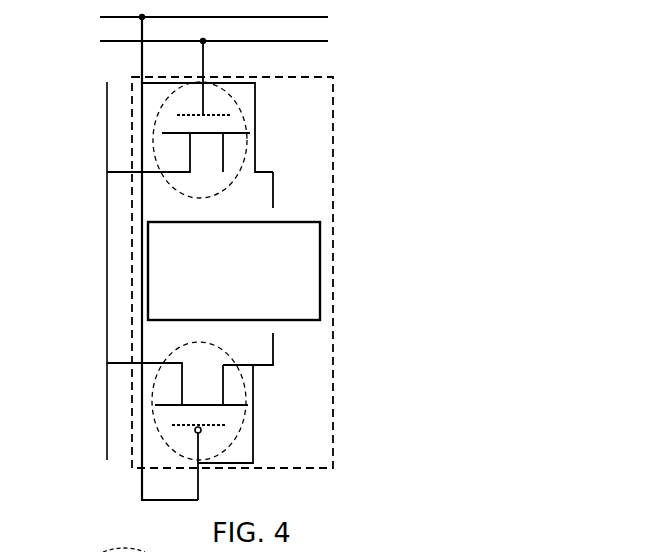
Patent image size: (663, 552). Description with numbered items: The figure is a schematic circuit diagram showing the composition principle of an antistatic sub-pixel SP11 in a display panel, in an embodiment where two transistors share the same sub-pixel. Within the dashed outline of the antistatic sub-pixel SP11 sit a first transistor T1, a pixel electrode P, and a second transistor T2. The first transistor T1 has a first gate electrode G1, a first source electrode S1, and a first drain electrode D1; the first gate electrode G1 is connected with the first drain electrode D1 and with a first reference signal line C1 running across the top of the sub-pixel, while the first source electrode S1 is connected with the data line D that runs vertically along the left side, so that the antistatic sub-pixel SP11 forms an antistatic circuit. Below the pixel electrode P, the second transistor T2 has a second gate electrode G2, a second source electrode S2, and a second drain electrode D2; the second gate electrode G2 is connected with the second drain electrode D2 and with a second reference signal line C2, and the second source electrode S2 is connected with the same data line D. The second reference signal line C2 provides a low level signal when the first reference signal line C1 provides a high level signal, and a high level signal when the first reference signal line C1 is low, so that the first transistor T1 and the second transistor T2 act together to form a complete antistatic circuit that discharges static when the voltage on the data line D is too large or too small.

The first reference signal line C1 is at (224, 48).
The second reference signal line C2 is at (224, 24).
The data line D is at (107, 279).
The antistatic sub-pixel SP11 is at (132, 278).
The pixel electrode P is at (234, 271).
The first transistor T1 is at (167, 119).
The first gate electrode G1 is at (204, 78).
The first source electrode S1 is at (148, 152).
The first drain electrode D1 is at (235, 152).
The second transistor T2 is at (161, 411).
The second gate electrode G2 is at (199, 462).
The second source electrode S2 is at (144, 385).
The second drain electrode D2 is at (236, 386).